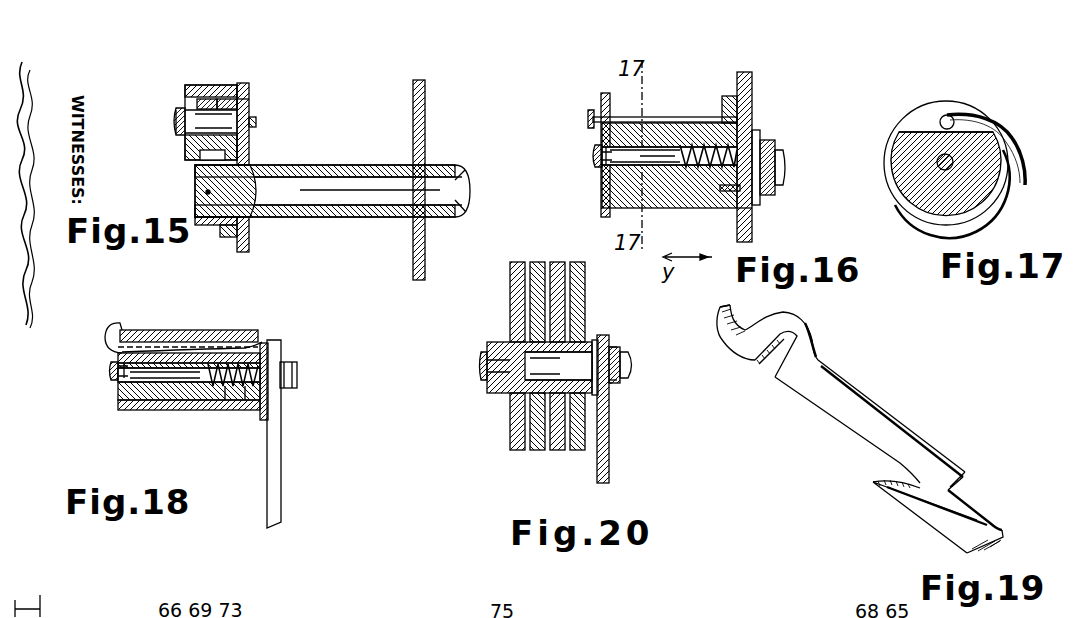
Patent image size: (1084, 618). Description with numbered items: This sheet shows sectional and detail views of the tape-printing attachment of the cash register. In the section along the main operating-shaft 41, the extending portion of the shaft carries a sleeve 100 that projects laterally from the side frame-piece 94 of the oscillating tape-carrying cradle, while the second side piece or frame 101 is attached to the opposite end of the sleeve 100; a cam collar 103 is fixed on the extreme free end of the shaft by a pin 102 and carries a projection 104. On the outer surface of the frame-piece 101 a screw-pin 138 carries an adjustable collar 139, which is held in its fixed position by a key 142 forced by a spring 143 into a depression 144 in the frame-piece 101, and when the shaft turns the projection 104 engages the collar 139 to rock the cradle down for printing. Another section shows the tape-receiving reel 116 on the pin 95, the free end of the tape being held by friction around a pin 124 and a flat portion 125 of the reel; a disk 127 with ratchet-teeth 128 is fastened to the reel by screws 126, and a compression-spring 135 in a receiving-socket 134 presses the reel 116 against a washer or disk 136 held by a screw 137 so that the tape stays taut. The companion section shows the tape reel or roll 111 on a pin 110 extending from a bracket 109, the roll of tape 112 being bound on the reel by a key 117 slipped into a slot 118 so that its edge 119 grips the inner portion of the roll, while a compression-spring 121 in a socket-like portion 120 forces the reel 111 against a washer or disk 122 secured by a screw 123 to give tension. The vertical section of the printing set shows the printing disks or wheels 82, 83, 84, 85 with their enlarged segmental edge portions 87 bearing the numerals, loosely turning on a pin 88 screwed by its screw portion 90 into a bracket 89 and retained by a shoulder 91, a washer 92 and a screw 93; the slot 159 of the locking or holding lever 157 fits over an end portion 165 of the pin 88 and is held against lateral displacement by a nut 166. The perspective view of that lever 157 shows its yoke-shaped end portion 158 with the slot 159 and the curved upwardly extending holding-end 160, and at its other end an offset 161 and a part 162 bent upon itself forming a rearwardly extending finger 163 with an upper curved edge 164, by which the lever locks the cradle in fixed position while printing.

In FIG. 15, the main operating-shaft 41 is at (437, 185).
In FIG. 15, the side frame-piece 94 is at (427, 103).
In FIG. 15, the sleeve 100 is at (330, 165).
In FIG. 15, the second side piece or frame 101 is at (250, 138).
In FIG. 15, the pin 102 is at (205, 192).
In FIG. 15, the cam collar 103 is at (200, 226).
In FIG. 15, the projection 104 is at (228, 237).
In FIG. 15, the screw-pin 138 is at (175, 118).
In FIG. 15, the collar 139 is at (185, 90).
In FIG. 15, the key 142 is at (226, 99).
In FIG. 15, the spring 143 is at (208, 99).
In FIG. 15, the depression 144 is at (249, 100).
In FIG. 16, the pin 95 is at (662, 160).
In FIG. 17, the pin 95 is at (937, 163).
In FIG. 16, the tape-receiving reel 116 is at (700, 180).
In FIG. 17, the tape-receiving reel 116 is at (913, 190).
In FIG. 16, the pin 124 is at (683, 117).
In FIG. 17, the pin 124 is at (950, 115).
In FIG. 17, the flat portion 125 is at (922, 131).
In FIG. 16, the screws 126 is at (752, 210).
In FIG. 16, the disk 127 is at (752, 100).
In FIG. 16, the ratchet-teeth 128 is at (752, 75).
In FIG. 16, the receiving-socket 134 is at (712, 123).
In FIG. 16, the compression-spring 135 is at (752, 122).
In FIG. 16, the washer or disk 136 is at (606, 165).
In FIG. 16, the screw 137 is at (592, 156).
In FIG. 18, the bracket 109 is at (281, 450).
In FIG. 18, the pin 110 is at (205, 385).
In FIG. 18, the tape reel or roll 111 is at (150, 410).
In FIG. 18, the roll of tape 112 is at (150, 330).
In FIG. 18, the key 117 is at (105, 343).
In FIG. 18, the slot 118 is at (266, 343).
In FIG. 18, the edge 119 is at (185, 330).
In FIG. 18, the socket-like portion 120 is at (228, 410).
In FIG. 18, the compression-spring 121 is at (240, 410).
In FIG. 18, the washer or disk 122 is at (118, 378).
In FIG. 18, the screw 123 is at (110, 371).
In FIG. 20, the printing disk or wheel 82 is at (517, 450).
In FIG. 20, the printing disk or wheel 83 is at (537, 450).
In FIG. 20, the printing disk or wheel 84 is at (557, 450).
In FIG. 20, the printing disk or wheel 85 is at (577, 450).
In FIG. 20, the enlarged segmental edge portions 87 is at (578, 260).
In FIG. 20, the pin 88 is at (552, 366).
In FIG. 20, the bracket 89 is at (609, 455).
In FIG. 20, the screw portion 90 is at (611, 385).
In FIG. 20, the shoulder 91 is at (594, 340).
In FIG. 20, the washer 92 is at (487, 385).
In FIG. 20, the screw 93 is at (480, 365).
In FIG. 20, the end portion 165 is at (630, 360).
In FIG. 20, the nut 166 is at (620, 378).
In FIG. 19, the locking or holding lever 157 is at (863, 413).
In FIG. 20, the yoke-shaped end portion 158 is at (617, 350).
In FIG. 19, the yoke-shaped end portion 158 is at (790, 322).
In FIG. 20, the slot 159 is at (617, 383).
In FIG. 19, the slot 159 is at (770, 366).
In FIG. 19, the holding-end 160 is at (722, 307).
In FIG. 19, the offset 161 is at (966, 477).
In FIG. 19, the part bent upon itself 162 is at (1002, 530).
In FIG. 19, the finger 163 is at (930, 520).
In FIG. 19, the upper curved edge 164 is at (920, 487).